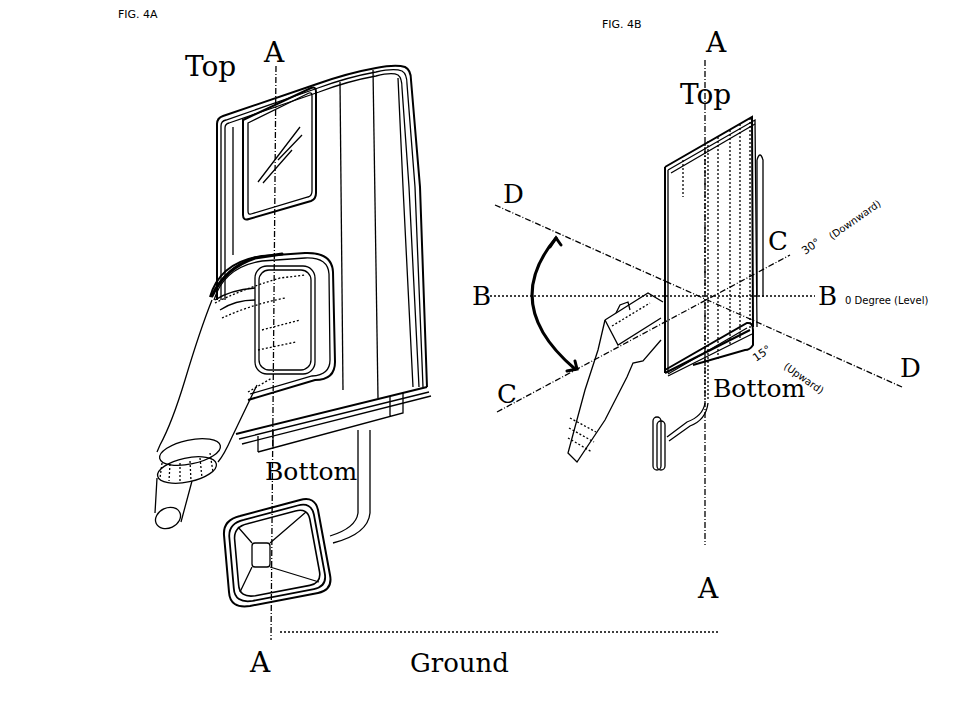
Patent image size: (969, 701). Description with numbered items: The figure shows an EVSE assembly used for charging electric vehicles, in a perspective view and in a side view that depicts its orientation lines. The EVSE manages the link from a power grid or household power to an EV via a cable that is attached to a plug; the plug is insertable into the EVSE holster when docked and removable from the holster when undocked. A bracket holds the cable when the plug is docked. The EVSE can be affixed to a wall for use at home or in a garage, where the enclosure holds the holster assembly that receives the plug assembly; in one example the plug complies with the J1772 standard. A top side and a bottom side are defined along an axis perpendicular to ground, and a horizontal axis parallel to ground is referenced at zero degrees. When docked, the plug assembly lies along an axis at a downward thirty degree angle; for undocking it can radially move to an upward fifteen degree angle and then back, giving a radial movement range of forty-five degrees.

In FIG. 4A, the element enclosure is at (233, 214).
In FIG. 4B, the element enclosure is at (714, 258).
In FIG. 4A, the holster assembly holster is at (270, 260).
In FIG. 4B, the holster assembly holster is at (709, 348).
In FIG. 4A, the plug assembly plug is at (178, 378).
In FIG. 4B, the plug assembly plug is at (615, 377).
In FIG. 4A, the element cable is at (153, 501).
In FIG. 4A, the element bracket is at (375, 483).
In FIG. 4B, the element bracket is at (680, 436).